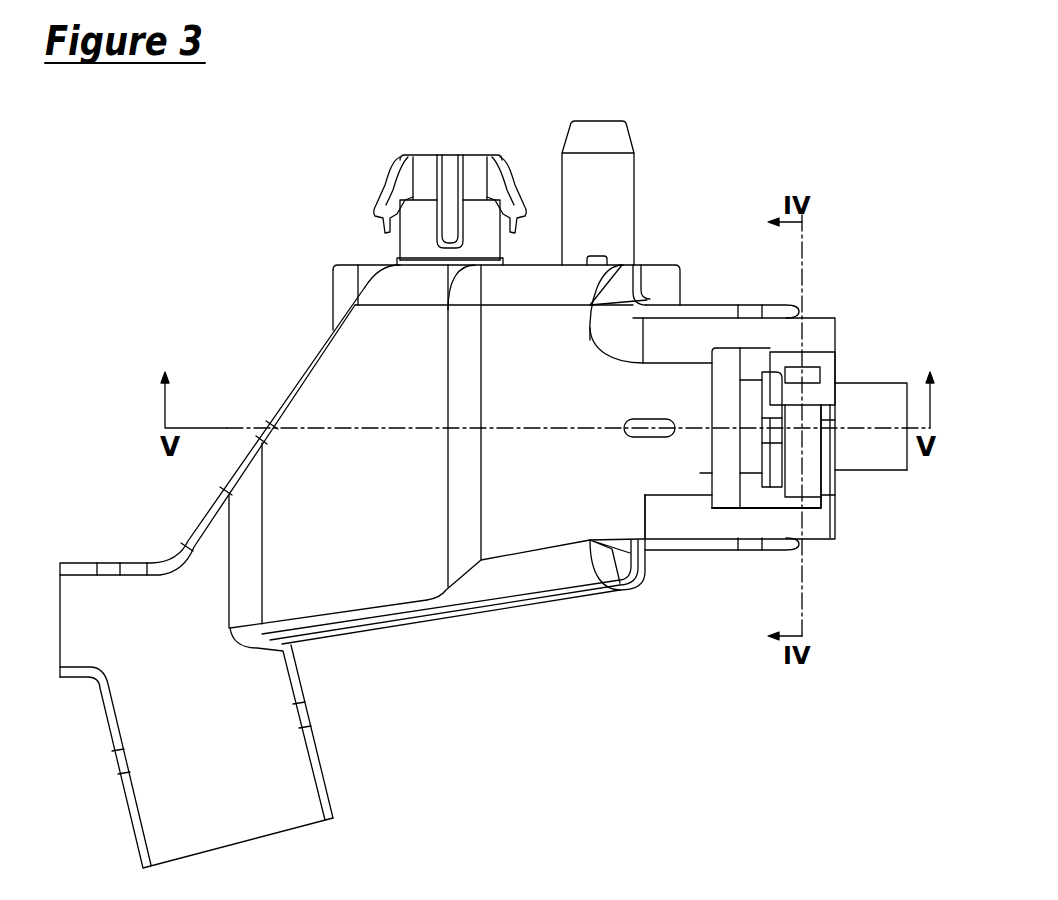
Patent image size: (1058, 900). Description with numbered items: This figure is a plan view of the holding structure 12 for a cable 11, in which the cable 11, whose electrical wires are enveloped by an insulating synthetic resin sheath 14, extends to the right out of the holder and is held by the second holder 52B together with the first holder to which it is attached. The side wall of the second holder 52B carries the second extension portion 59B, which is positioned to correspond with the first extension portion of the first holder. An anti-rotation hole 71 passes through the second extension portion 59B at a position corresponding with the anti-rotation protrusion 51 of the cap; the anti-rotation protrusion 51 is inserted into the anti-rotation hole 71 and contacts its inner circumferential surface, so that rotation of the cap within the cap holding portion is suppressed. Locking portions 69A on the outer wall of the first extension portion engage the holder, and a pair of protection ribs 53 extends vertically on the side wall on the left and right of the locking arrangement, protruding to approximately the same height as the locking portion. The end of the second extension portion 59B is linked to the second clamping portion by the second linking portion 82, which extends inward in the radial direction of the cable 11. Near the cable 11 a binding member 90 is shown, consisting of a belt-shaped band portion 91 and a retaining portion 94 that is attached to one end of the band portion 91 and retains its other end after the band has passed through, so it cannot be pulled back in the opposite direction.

The cable 11 is at (887, 392).
The holding structure 12 is at (209, 301).
The sheath 14 is at (883, 463).
The anti-rotation protrusion 51 is at (655, 436).
The second holder 52B is at (288, 398).
The protection rib 53 is at (793, 305).
The second extension portion 59B is at (817, 525).
The locking portion 69A is at (748, 311).
The anti-rotation hole 71 is at (633, 434).
The second linking portion 82 is at (833, 487).
The binding member 90 is at (820, 362).
The band portion 91 is at (807, 370).
The retaining portion 94 is at (827, 373).